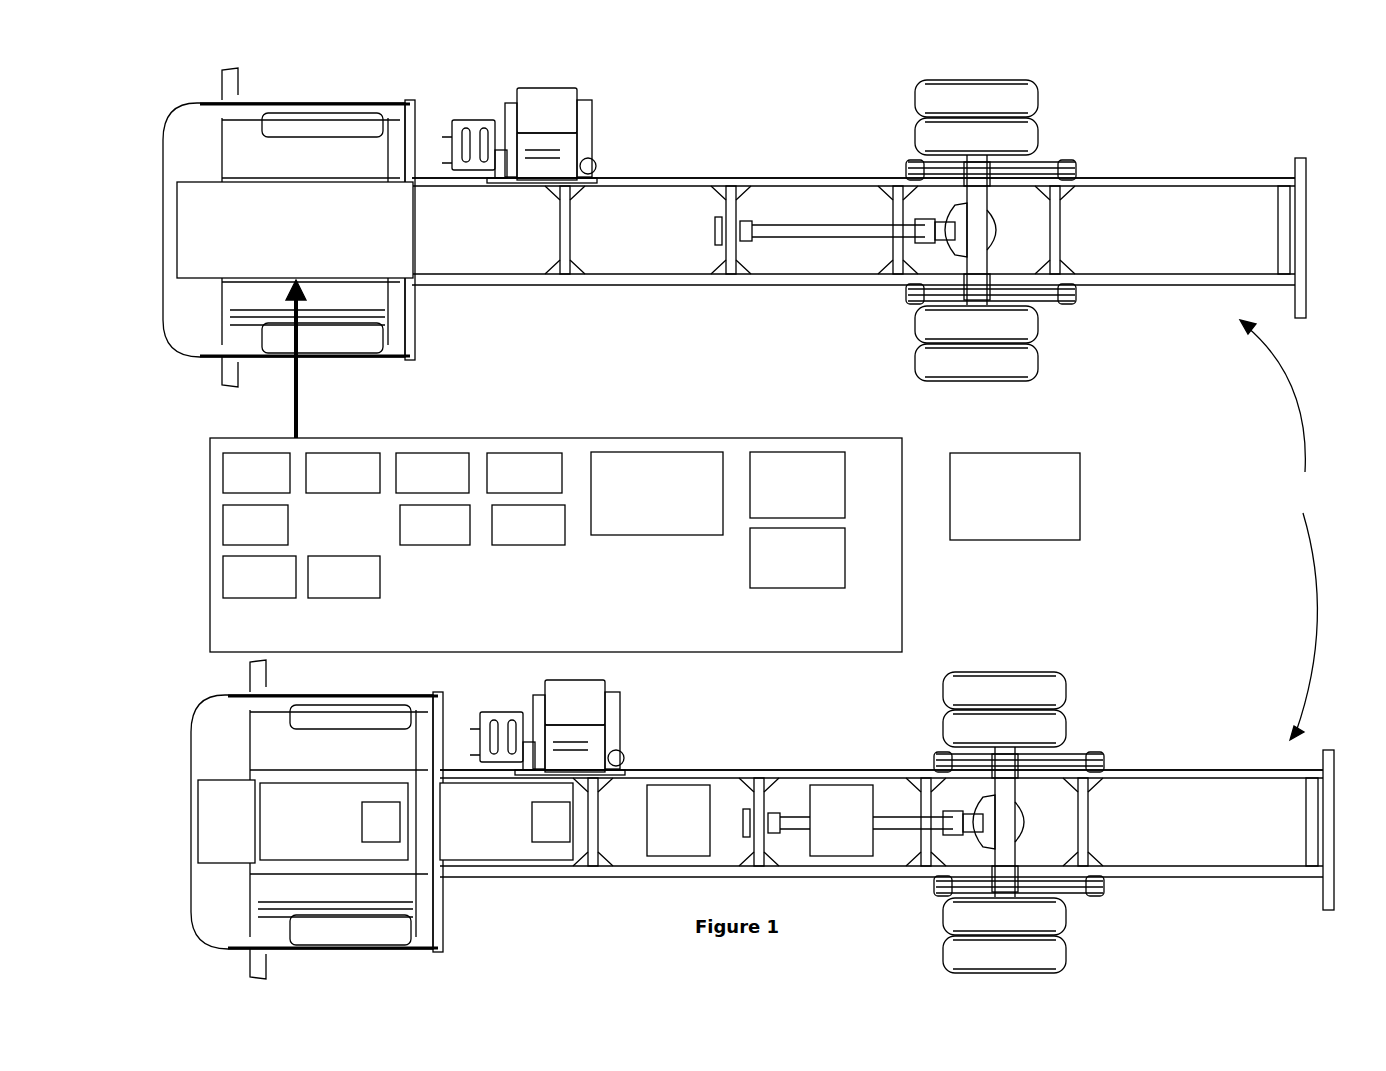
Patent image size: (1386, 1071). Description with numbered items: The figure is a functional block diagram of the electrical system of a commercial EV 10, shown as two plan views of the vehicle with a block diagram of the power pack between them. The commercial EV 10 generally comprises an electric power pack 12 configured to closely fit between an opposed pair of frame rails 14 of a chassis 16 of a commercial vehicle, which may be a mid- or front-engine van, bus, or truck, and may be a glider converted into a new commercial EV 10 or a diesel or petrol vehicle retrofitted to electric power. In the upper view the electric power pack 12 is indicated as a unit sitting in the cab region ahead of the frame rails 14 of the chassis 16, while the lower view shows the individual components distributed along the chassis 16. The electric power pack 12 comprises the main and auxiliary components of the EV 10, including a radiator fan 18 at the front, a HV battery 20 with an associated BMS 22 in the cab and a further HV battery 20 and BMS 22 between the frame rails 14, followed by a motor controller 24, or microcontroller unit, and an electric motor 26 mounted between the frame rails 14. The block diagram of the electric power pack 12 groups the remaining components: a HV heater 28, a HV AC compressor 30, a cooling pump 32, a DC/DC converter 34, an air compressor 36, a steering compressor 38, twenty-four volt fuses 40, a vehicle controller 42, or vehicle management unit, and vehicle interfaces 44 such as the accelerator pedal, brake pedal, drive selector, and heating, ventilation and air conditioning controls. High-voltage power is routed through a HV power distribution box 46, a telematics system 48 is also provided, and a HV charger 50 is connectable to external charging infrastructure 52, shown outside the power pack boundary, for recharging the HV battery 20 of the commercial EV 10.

The commercial EV 10 is at (1289, 530).
The electric power pack 12 is at (615, 426).
The frame rails 14 is at (1210, 268).
The chassis 16 is at (734, 178).
The radiator fan 18 is at (196, 813).
The HV battery 20 is at (295, 778).
The BMS 22 is at (380, 840).
The motor controller 24 is at (672, 860).
The electric motor 26 is at (835, 860).
The HV heater 28 is at (222, 522).
The HV AC compressor 30 is at (222, 580).
The cooling pump 32 is at (340, 452).
The DC/DC converter 34 is at (380, 583).
The air compressor 36 is at (432, 452).
The steering compressor 38 is at (440, 548).
The 24 V fuses 40 is at (517, 452).
The vehicle controller 42 is at (520, 548).
The vehicle interfaces 44 is at (657, 537).
The HV power distribution box 46 is at (797, 450).
The telematics system 48 is at (222, 462).
The HV charger 50 is at (790, 592).
The charging infrastructure 52 is at (1085, 497).